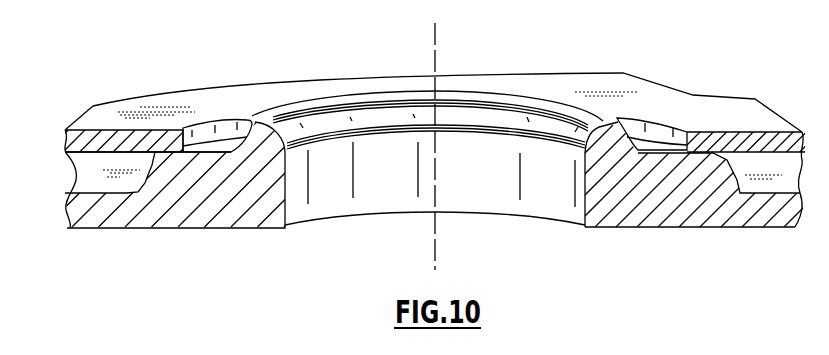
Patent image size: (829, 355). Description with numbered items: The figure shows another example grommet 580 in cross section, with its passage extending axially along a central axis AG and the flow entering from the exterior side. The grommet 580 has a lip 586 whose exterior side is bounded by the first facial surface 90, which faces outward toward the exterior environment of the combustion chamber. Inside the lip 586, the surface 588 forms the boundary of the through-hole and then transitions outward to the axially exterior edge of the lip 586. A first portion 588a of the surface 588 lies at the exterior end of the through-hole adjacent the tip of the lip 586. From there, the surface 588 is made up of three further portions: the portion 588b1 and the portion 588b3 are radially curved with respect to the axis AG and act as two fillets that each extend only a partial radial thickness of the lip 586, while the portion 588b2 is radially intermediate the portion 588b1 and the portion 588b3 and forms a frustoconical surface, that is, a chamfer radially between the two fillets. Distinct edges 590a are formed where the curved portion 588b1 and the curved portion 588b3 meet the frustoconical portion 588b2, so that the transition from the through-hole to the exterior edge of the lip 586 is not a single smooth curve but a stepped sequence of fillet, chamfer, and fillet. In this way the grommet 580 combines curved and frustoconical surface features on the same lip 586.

The grommet 580 is at (386, 226).
The pipe wall section 586 is at (606, 120).
The surface 588 is at (535, 192).
The inner bore surface of pipe 588a is at (318, 196).
The portion of the surface 588b1 is at (323, 122).
The portion of the surface 588b2 is at (290, 128).
The outer surface portion of pipe 588b3 is at (507, 107).
The distinct edges 590a is at (405, 130).
The first facial surface 90 is at (255, 120).
The central axis AG is at (441, 96).